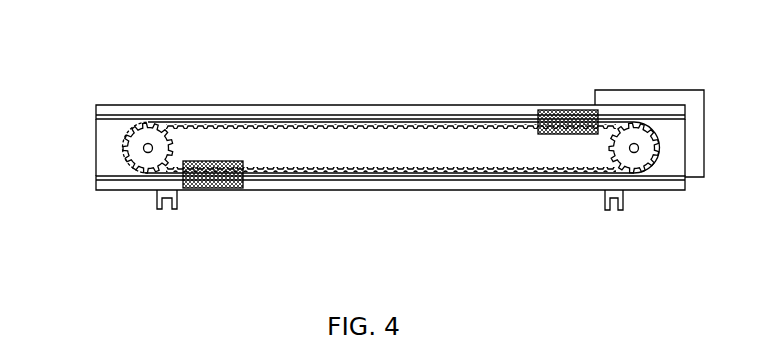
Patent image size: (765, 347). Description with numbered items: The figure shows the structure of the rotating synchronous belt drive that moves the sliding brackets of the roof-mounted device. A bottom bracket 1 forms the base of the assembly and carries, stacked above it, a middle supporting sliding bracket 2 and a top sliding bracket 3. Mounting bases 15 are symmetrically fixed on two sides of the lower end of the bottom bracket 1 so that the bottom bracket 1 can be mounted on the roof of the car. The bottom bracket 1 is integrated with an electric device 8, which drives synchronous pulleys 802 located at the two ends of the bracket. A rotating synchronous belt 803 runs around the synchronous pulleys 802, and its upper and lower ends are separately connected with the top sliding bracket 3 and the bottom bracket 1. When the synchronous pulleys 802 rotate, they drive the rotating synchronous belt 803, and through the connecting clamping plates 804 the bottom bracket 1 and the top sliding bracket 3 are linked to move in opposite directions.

The bottom bracket 1 is at (97, 183).
The middle supporting sliding bracket 2 is at (107, 152).
The top sliding bracket 3 is at (110, 112).
The electric device 8 is at (677, 95).
The mounting base 15 is at (157, 211).
The synchronous pulley 802 is at (158, 128).
The rotating synchronous belt 803 is at (297, 134).
The connecting clamping plate 804 is at (542, 108).